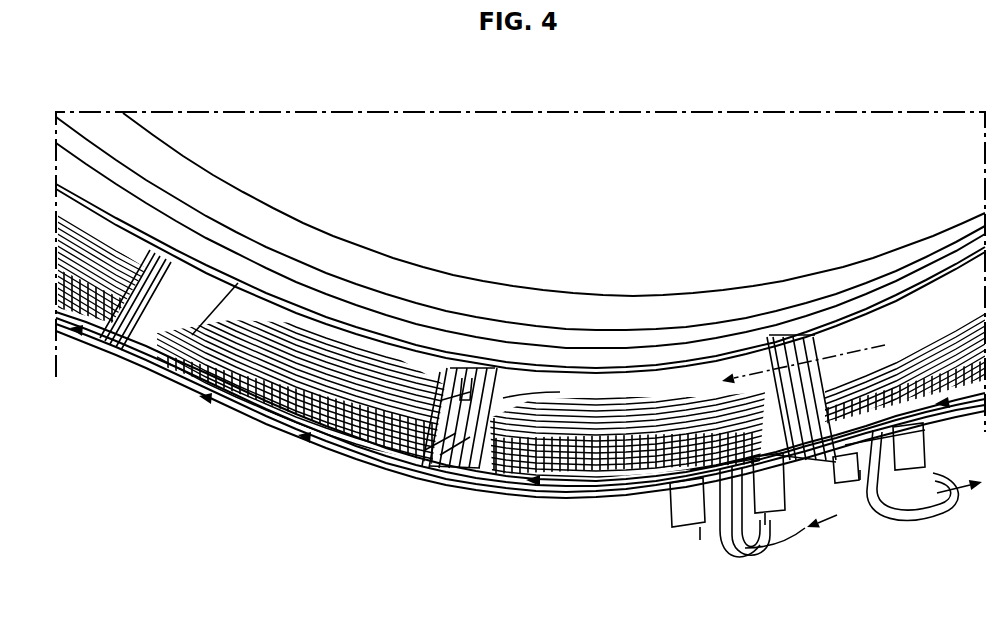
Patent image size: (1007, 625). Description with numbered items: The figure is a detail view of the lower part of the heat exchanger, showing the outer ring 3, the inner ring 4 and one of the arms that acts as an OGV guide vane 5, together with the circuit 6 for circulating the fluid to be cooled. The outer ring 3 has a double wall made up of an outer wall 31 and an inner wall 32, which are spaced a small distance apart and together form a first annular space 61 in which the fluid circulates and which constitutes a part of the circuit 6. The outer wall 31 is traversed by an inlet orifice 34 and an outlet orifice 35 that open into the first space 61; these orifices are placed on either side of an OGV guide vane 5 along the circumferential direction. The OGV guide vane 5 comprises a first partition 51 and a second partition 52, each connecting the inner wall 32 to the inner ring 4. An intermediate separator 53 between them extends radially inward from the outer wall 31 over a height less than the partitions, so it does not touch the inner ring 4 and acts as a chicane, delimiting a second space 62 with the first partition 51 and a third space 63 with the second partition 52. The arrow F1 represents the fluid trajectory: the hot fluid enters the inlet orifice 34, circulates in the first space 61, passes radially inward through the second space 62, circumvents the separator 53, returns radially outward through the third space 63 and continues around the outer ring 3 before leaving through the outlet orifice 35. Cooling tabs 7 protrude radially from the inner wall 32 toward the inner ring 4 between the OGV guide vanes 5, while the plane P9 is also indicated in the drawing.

The outer ring 3 is at (520, 424).
The inner ring 4 is at (290, 246).
The OGV guide vane 5 is at (786, 338).
The circuit 6 is at (520, 433).
The cooling tabs 7 is at (658, 388).
The outer wall 31 is at (252, 425).
The inner wall 32 is at (232, 403).
The inlet orifice 34 is at (728, 478).
The outlet orifice 35 is at (870, 432).
The first partition 51 is at (503, 398).
The second partition 52 is at (438, 396).
The intermediate separator 53 is at (466, 392).
The first annular space 61 is at (172, 383).
The second space 62 is at (470, 437).
The third space 63 is at (456, 433).
The arrow F1 is at (632, 480).
The reference plane P9 is at (750, 368).